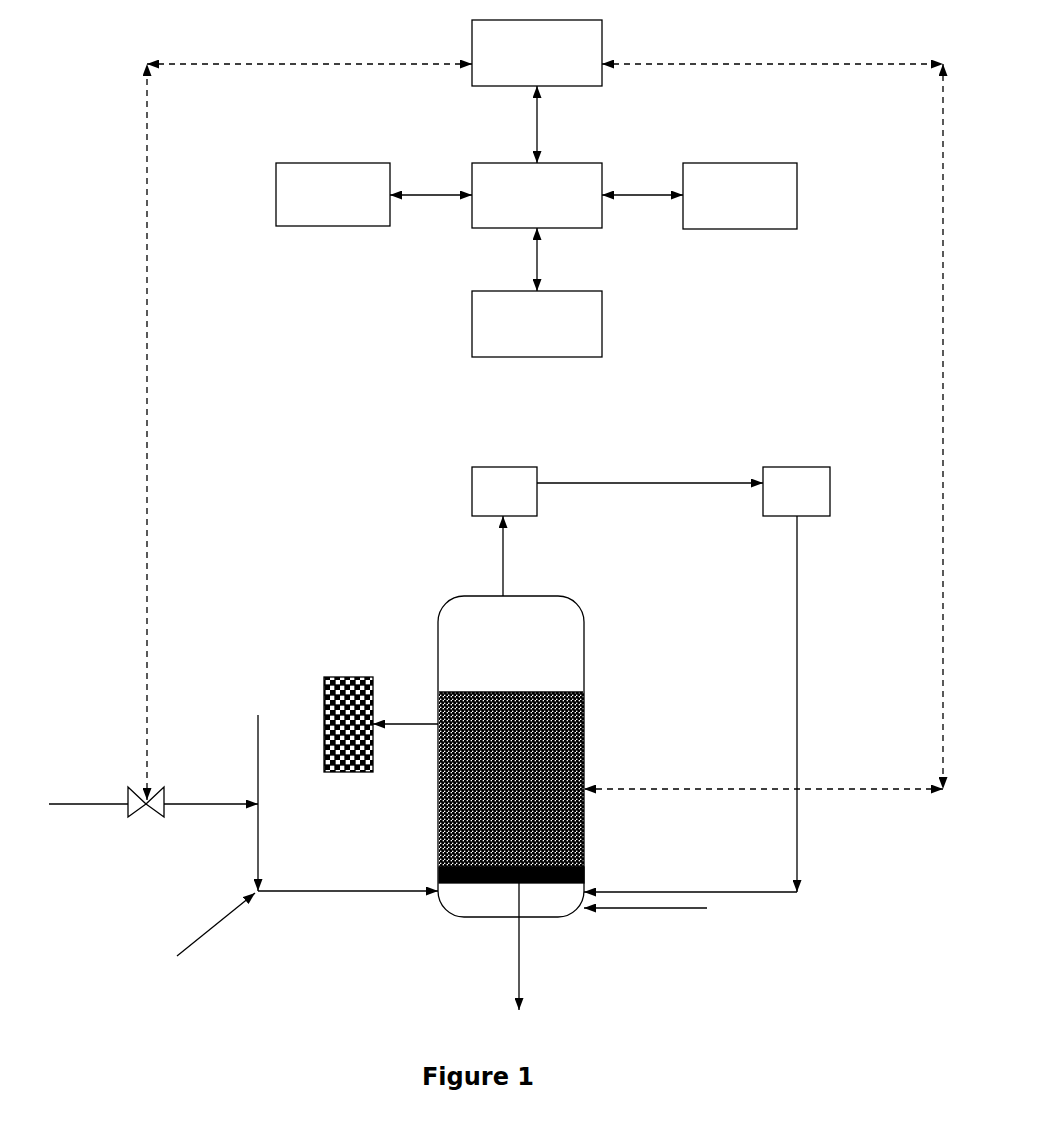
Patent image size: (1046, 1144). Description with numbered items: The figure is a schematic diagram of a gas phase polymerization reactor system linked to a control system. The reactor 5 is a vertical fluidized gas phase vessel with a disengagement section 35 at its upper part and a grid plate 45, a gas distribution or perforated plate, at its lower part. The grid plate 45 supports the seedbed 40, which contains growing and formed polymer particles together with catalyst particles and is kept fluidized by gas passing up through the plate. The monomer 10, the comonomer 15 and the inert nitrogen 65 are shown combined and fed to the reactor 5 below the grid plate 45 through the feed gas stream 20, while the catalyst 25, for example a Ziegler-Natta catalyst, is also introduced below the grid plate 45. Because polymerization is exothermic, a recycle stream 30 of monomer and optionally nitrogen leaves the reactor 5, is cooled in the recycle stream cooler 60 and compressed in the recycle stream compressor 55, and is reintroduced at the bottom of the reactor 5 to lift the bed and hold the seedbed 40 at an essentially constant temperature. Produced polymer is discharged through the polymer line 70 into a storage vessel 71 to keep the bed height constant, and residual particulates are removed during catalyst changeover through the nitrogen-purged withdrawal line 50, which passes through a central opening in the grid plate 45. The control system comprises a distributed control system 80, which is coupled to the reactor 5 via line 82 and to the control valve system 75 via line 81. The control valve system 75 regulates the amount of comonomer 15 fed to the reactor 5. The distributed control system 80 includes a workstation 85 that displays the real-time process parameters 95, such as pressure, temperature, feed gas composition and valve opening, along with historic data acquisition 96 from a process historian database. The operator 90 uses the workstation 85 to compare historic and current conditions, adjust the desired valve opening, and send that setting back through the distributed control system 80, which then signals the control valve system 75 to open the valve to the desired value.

The reactor 5 is at (585, 605).
The monomer 10 is at (258, 770).
The comonomer 15 is at (68, 803).
The feed gas stream 20 is at (383, 892).
The catalyst 25 is at (675, 910).
The recycle stream 30 is at (757, 892).
The disengagement section 35 is at (568, 645).
The seedbed 40 is at (567, 820).
The grid plate 45 is at (583, 880).
The withdrawal line 50 is at (519, 947).
The recycle stream compressor 55 is at (796, 491).
The recycle stream cooler 60 is at (617, 531).
The nitrogen 65 is at (228, 917).
The polymer line 70 is at (388, 722).
The storage vessel 71 is at (340, 682).
The control valve system 75 is at (148, 786).
The distributed control system 80 is at (537, 53).
The line 81 is at (147, 356).
The line 82 is at (940, 343).
The workstation 85 is at (537, 188).
The operator 90 is at (374, 194).
The process parameters 95 is at (537, 324).
The historic data acquisition 96 is at (699, 196).